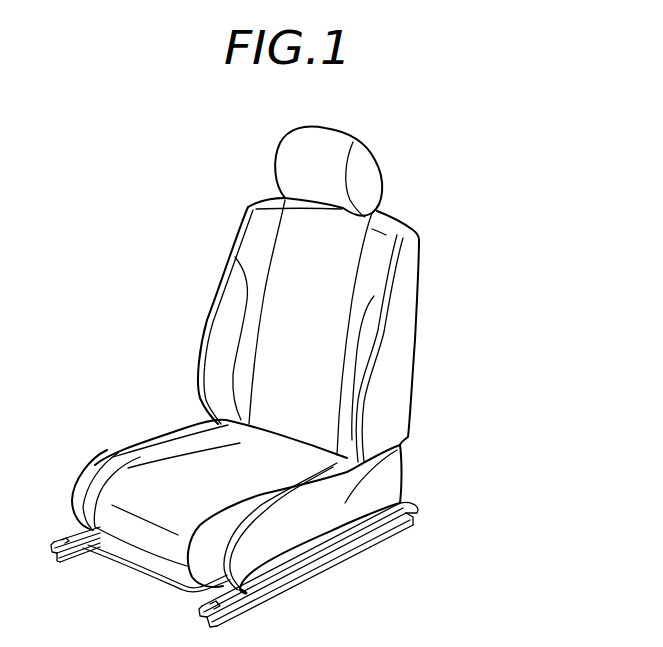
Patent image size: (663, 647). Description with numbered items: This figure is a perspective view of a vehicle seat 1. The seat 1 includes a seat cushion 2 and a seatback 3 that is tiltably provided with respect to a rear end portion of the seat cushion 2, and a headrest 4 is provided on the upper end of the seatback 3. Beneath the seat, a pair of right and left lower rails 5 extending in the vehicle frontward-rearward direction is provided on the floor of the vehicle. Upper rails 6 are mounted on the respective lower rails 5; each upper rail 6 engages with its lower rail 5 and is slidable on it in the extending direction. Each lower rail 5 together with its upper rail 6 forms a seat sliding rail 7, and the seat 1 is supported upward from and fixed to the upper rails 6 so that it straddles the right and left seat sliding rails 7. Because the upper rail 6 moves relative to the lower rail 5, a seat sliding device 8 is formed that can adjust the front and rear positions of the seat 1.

The seat 1 is at (501, 196).
The seat cushion 2 is at (173, 480).
The seatback 3 is at (403, 320).
The headrest 4 is at (368, 177).
The lower rail 5 is at (398, 525).
The upper rail 6 is at (402, 502).
The seat sliding rail 7 is at (450, 470).
The seat sliding device 8 is at (383, 583).